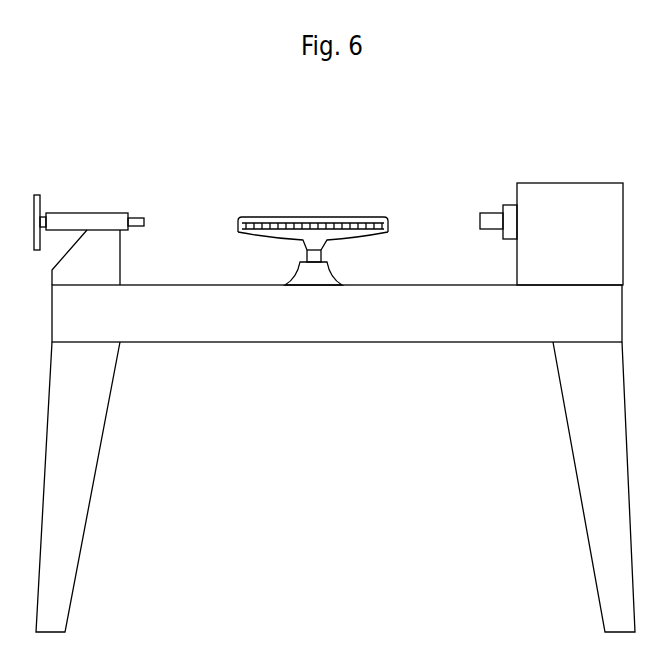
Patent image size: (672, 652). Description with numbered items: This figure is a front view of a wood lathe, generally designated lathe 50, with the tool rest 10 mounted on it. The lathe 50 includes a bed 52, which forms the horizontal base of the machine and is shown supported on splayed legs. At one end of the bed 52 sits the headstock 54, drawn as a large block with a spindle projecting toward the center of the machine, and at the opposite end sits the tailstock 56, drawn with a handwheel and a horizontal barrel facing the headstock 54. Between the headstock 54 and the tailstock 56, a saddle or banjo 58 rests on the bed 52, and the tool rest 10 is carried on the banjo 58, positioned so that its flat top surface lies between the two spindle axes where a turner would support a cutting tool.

The tool rest 10 is at (298, 203).
The wood lathe 50 is at (335, 458).
The bed 52 is at (363, 313).
The headstock 54 is at (569, 212).
The tailstock 56 is at (112, 222).
The saddle or banjo 58 is at (325, 272).